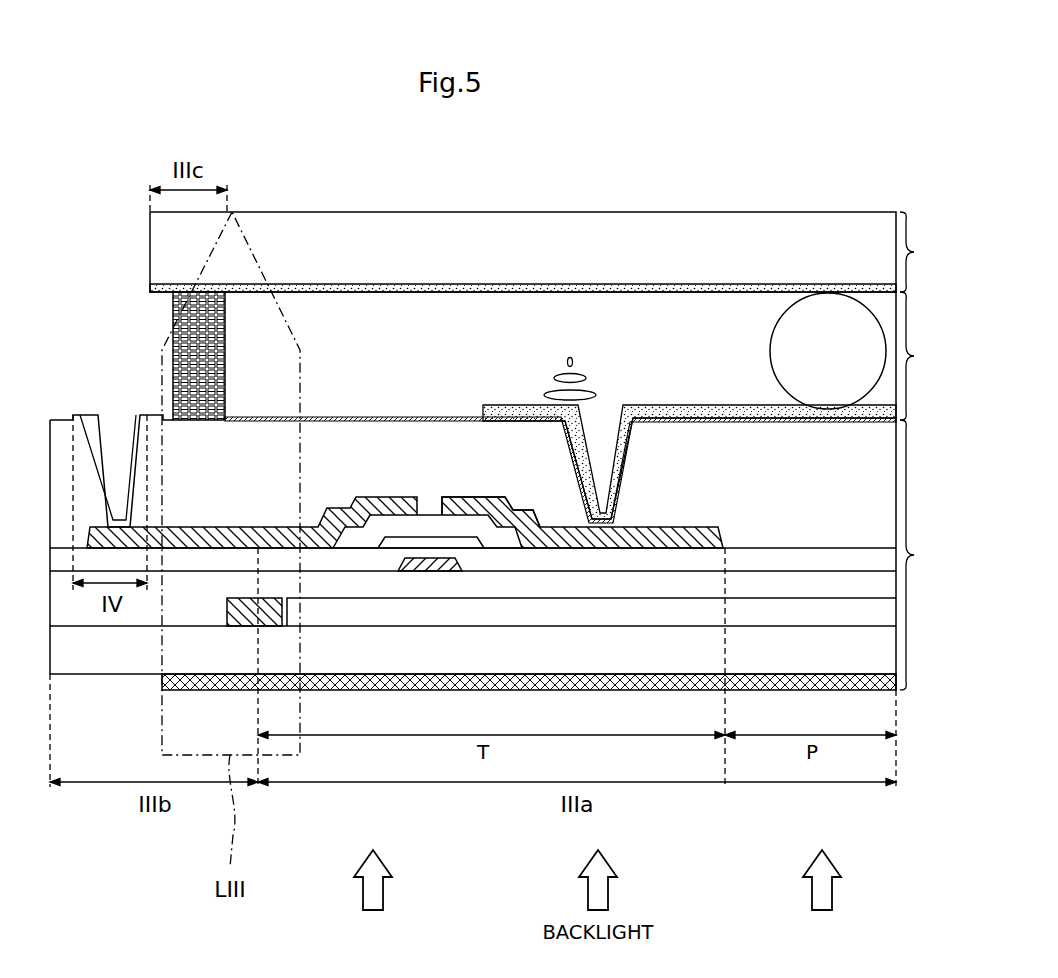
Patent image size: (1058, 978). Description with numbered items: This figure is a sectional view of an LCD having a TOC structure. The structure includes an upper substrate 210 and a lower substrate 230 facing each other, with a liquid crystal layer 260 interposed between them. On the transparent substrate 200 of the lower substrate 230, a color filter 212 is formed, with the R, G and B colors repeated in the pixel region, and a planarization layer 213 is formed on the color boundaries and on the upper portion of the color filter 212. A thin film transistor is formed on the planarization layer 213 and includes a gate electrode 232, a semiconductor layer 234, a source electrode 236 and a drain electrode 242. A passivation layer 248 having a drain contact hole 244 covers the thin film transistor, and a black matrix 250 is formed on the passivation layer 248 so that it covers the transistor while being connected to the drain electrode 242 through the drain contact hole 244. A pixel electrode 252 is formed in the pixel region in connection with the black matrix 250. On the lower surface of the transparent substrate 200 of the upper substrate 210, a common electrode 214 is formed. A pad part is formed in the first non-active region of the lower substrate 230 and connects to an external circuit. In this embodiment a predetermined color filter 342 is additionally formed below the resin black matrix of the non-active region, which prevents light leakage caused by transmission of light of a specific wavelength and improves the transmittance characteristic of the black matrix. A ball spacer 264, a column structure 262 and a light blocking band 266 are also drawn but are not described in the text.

The transparent substrate 200 is at (524, 261).
The upper substrate 210 is at (554, 252).
The color filter 212 is at (811, 612).
The planarization layer 213 is at (212, 585).
The common electrode 214 is at (718, 284).
The lower substrate 230 is at (504, 491).
The gate electrode 232 is at (432, 571).
The semiconductor layer 234 is at (500, 538).
The source electrode 236 is at (380, 497).
The drain electrode 242 is at (472, 497).
The drain contact hole 244 is at (612, 400).
The passivation layer 248 is at (418, 432).
The black matrix 250 is at (355, 415).
The pixel electrode 252 is at (711, 413).
The liquid crystal layer 260 is at (929, 356).
The column spacer / sealant 262 is at (187, 380).
The ball spacer 264 is at (827, 395).
The light blocking layer 266 is at (762, 672).
The color filter 342 is at (227, 627).